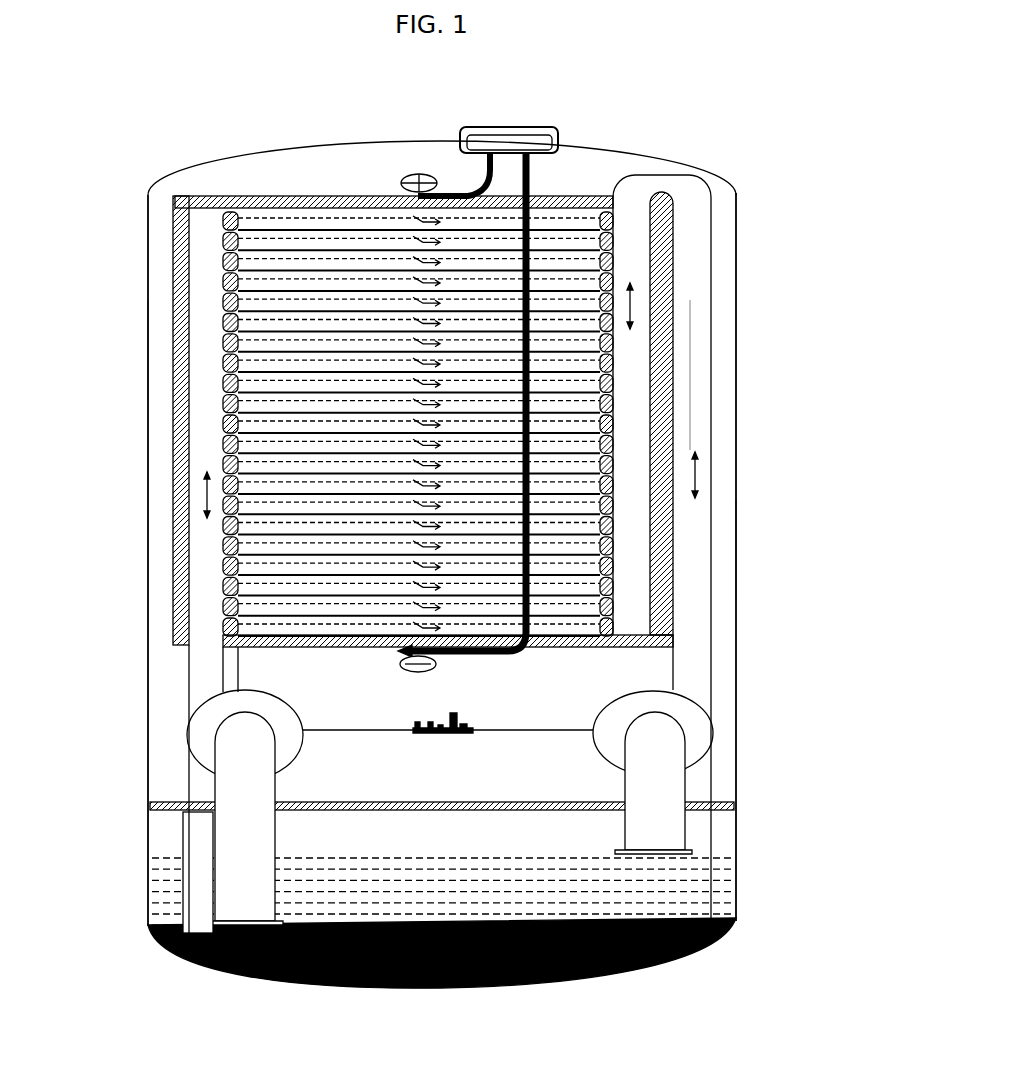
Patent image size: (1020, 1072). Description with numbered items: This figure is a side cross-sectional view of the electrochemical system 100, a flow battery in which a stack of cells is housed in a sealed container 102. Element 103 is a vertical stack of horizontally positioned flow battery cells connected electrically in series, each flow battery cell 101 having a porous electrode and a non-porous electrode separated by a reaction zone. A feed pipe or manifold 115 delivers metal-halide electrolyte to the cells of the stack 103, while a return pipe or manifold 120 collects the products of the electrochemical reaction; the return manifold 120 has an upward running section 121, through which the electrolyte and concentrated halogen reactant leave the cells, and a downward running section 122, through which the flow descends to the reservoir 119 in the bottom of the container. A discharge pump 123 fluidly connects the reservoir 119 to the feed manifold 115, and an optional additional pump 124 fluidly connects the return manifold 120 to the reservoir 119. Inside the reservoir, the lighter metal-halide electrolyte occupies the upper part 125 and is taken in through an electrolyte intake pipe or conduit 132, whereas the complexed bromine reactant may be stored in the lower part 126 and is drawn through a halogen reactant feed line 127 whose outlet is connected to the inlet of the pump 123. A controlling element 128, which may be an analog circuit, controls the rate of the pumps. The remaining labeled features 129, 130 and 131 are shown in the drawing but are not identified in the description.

The electrochemical system 100 is at (456, 1048).
The flow battery cell 101 is at (712, 173).
The sealed container 102 is at (292, 162).
The stack of electrochemical cells 103 is at (258, 240).
The feed pipe or manifold 115 is at (208, 425).
The reservoir 119 is at (160, 822).
The return pipe or manifold 120 is at (815, 308).
The upward running section 121 is at (628, 349).
The downward running section 122 is at (690, 371).
The discharge pump 123 is at (240, 737).
The additional pump 124 is at (653, 737).
The upper part of the reservoir 125 is at (400, 890).
The lower part of the reservoir 126 is at (400, 937).
The halogen reactant feed line 127 is at (185, 858).
The controlling element 128 is at (447, 733).
The outer gap 129 is at (163, 338).
The top plate 130 is at (218, 173).
The right gap 131 is at (722, 540).
The electrolyte intake feed line 132 is at (240, 773).